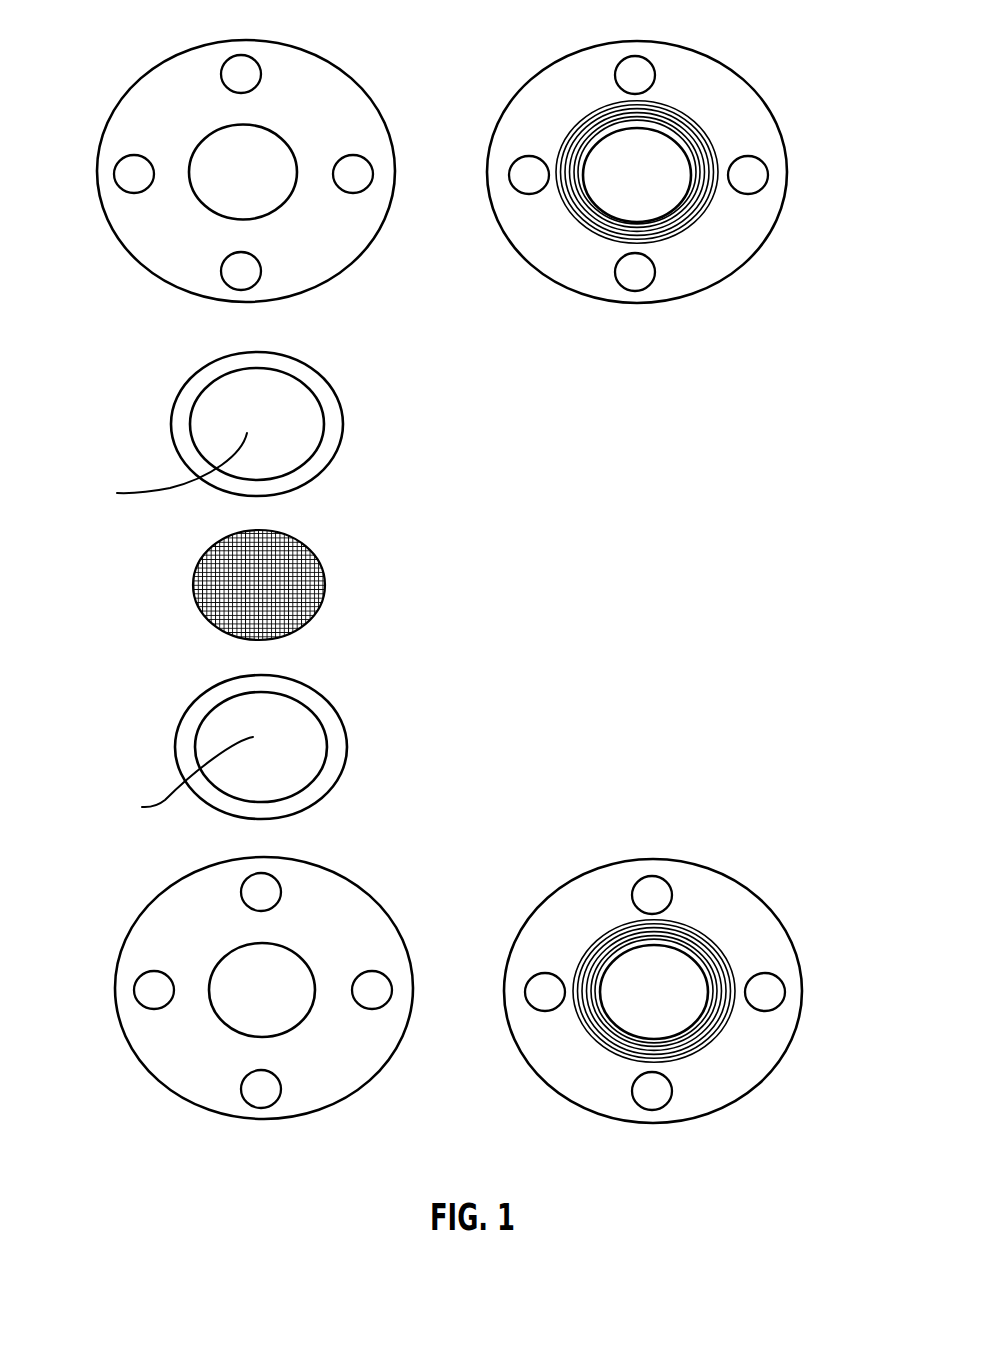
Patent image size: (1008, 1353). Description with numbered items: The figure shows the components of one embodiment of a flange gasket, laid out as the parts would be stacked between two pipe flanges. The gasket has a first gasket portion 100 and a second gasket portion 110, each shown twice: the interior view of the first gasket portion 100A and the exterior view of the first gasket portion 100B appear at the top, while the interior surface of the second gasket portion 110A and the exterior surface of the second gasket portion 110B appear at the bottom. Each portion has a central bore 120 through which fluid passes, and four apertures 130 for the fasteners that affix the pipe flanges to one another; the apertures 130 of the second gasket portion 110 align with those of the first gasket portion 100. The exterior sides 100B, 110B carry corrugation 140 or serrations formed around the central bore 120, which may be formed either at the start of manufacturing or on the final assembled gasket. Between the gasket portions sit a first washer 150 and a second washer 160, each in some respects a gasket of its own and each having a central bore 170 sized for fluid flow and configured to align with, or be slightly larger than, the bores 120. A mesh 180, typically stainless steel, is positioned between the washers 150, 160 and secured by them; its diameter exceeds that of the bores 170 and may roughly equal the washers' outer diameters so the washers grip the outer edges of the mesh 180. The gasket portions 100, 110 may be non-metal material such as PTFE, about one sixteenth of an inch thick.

The first gasket portion 100 is at (122, 43).
The second gasket portion 110 is at (127, 877).
The interior view of the first gasket portion 100A is at (338, 233).
The exterior view of the first gasket portion 100B is at (740, 228).
The interior surface of the second gasket portion 110A is at (340, 1052).
The exterior surface of the second gasket portion 110B is at (747, 1053).
The central bore 120 is at (243, 172).
The apertures 130 is at (353, 177).
The corrugation 140 is at (695, 135).
The first washer 150 is at (342, 425).
The second washer 160 is at (337, 713).
The central bore 170 is at (164, 629).
The mesh 180 is at (318, 560).